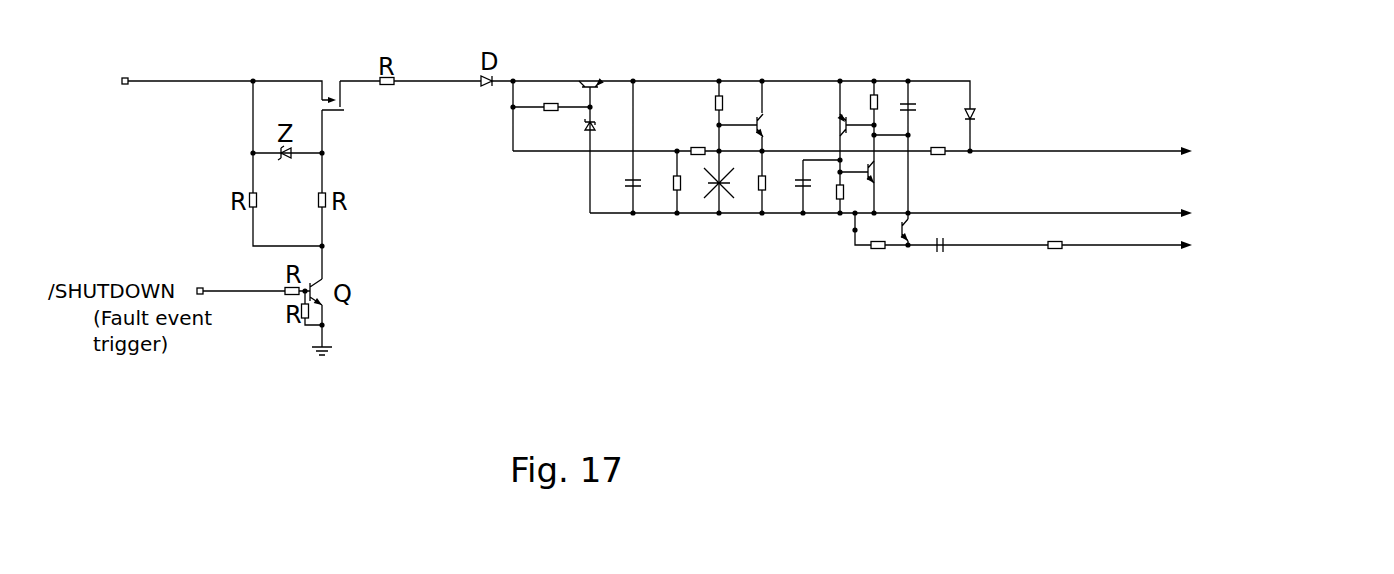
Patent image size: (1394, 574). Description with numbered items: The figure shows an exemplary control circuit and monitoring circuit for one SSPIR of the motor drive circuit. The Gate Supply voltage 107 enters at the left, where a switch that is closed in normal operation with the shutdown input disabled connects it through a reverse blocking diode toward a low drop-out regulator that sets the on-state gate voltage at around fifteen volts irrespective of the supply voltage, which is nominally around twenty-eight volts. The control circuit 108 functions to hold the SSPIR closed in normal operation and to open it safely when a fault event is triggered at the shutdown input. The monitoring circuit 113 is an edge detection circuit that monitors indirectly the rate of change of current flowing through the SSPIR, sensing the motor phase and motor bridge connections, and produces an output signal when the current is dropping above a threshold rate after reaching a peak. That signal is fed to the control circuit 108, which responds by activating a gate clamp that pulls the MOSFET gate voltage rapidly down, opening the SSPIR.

The Gate Supply voltage 107 is at (170, 65).
The control circuit 108 is at (932, 242).
The monitoring circuit 113 is at (827, 304).